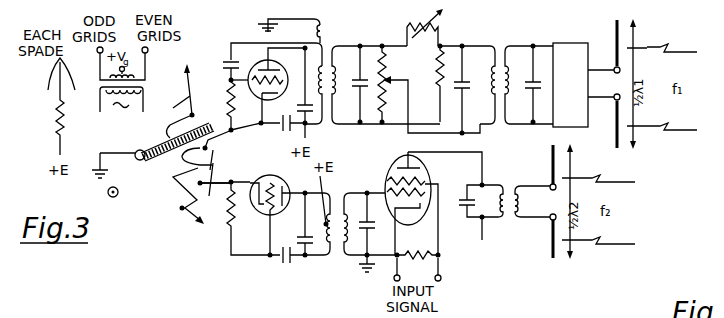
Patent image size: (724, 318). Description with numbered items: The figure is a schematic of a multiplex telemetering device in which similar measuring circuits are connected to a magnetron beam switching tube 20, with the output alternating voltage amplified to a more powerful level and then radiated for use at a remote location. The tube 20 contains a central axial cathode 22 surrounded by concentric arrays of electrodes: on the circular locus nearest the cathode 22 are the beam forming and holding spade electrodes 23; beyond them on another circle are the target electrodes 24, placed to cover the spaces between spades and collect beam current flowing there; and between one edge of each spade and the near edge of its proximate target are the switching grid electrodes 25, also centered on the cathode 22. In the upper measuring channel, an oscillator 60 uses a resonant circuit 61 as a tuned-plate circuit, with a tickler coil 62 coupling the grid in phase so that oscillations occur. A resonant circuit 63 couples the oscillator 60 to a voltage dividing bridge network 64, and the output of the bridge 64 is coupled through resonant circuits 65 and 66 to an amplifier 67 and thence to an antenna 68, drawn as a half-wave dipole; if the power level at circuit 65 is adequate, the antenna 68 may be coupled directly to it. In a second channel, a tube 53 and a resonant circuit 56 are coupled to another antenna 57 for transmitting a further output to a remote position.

The magnetron beam switching tube 20 is at (156, 205).
The cathode 22 is at (137, 151).
The spade electrodes 23 is at (169, 138).
The target electrodes 24 is at (208, 148).
The switching grid electrodes 25 is at (180, 208).
The tube 53 is at (385, 180).
The resonant circuit 56 is at (507, 185).
The antenna 57 is at (550, 220).
The oscillator 60 is at (306, 12).
The resonant circuit 61 is at (314, 124).
The tickler coil 62 is at (322, 32).
The resonant circuit 63 is at (343, 46).
The voltage dividing bridge network 64 is at (468, 34).
The resonant circuit 65 is at (491, 44).
The resonant circuit 66 is at (515, 44).
The amplifier 67 is at (580, 95).
The antenna 68 is at (615, 62).